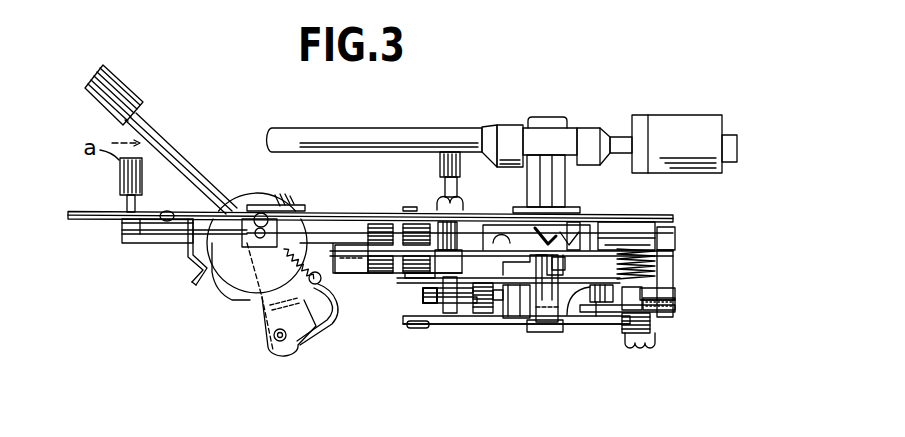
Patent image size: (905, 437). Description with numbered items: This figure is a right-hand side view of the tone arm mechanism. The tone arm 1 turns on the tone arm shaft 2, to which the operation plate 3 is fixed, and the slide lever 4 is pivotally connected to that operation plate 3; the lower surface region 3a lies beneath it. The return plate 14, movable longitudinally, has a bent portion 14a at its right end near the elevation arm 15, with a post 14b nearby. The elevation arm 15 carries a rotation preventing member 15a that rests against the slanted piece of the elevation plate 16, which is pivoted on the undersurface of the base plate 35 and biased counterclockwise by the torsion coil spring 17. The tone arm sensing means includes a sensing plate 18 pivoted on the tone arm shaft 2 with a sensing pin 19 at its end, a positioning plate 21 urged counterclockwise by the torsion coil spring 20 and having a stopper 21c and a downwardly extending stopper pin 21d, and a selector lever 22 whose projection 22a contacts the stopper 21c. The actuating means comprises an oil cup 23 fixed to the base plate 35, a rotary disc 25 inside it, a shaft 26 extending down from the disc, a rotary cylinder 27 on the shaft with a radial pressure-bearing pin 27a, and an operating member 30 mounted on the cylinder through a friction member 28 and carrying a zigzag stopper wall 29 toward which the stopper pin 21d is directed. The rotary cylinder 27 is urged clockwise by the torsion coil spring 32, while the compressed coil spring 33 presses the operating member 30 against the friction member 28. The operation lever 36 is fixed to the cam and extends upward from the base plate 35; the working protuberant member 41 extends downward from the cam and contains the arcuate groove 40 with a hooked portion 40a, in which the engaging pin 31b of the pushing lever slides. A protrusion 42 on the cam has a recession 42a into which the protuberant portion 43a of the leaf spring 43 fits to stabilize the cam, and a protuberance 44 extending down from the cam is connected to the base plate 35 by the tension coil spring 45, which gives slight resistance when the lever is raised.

The tone arm 1 is at (355, 137).
The tone arm shaft 2 is at (540, 300).
The operation plate 3 is at (470, 318).
The base plate lower surface 3a is at (465, 324).
The slide lever 4 is at (410, 326).
The return plate 14 is at (447, 293).
The bent portion 14a is at (428, 305).
The bracket post 14b is at (483, 283).
The elevation arm 15 is at (446, 290).
The rotation preventing member 15a is at (404, 206).
The elevation plate 16 is at (364, 275).
The torsion coil spring 17 is at (380, 274).
The sensing plate 18 is at (514, 300).
The sensing pin 19 is at (596, 303).
The torsion coil spring 20 is at (424, 236).
The positioning plate 21 is at (484, 303).
The stopper 21c is at (516, 282).
The stopper pin 21d is at (588, 289).
The selector lever 22 is at (122, 229).
The projection 22a is at (564, 258).
The oil cup 23 is at (640, 238).
The rotary disc 25 is at (662, 231).
The shaft 26 is at (626, 333).
The rotary cylinder 27 is at (676, 293).
The pressure-bearing pin 27a is at (673, 264).
The friction member 28 is at (676, 304).
The zigzag stopper wall 29 is at (647, 305).
The operating member 30 is at (650, 311).
The engaging pin 31b is at (279, 342).
The torsion coil spring 32 is at (676, 251).
The compressed coil spring 33 is at (641, 349).
The base plate 35 is at (86, 211).
The operation lever 36 is at (168, 156).
The arcuate groove 40 is at (305, 324).
The hooked portion 40a is at (336, 312).
The working protuberant member 41 is at (262, 333).
The protrusion 42 is at (243, 288).
The recession 42a is at (218, 284).
The leaf spring 43 is at (185, 249).
The protuberant portion 43a is at (192, 278).
The protuberance 44 is at (323, 240).
The tension coil spring 45 is at (303, 205).